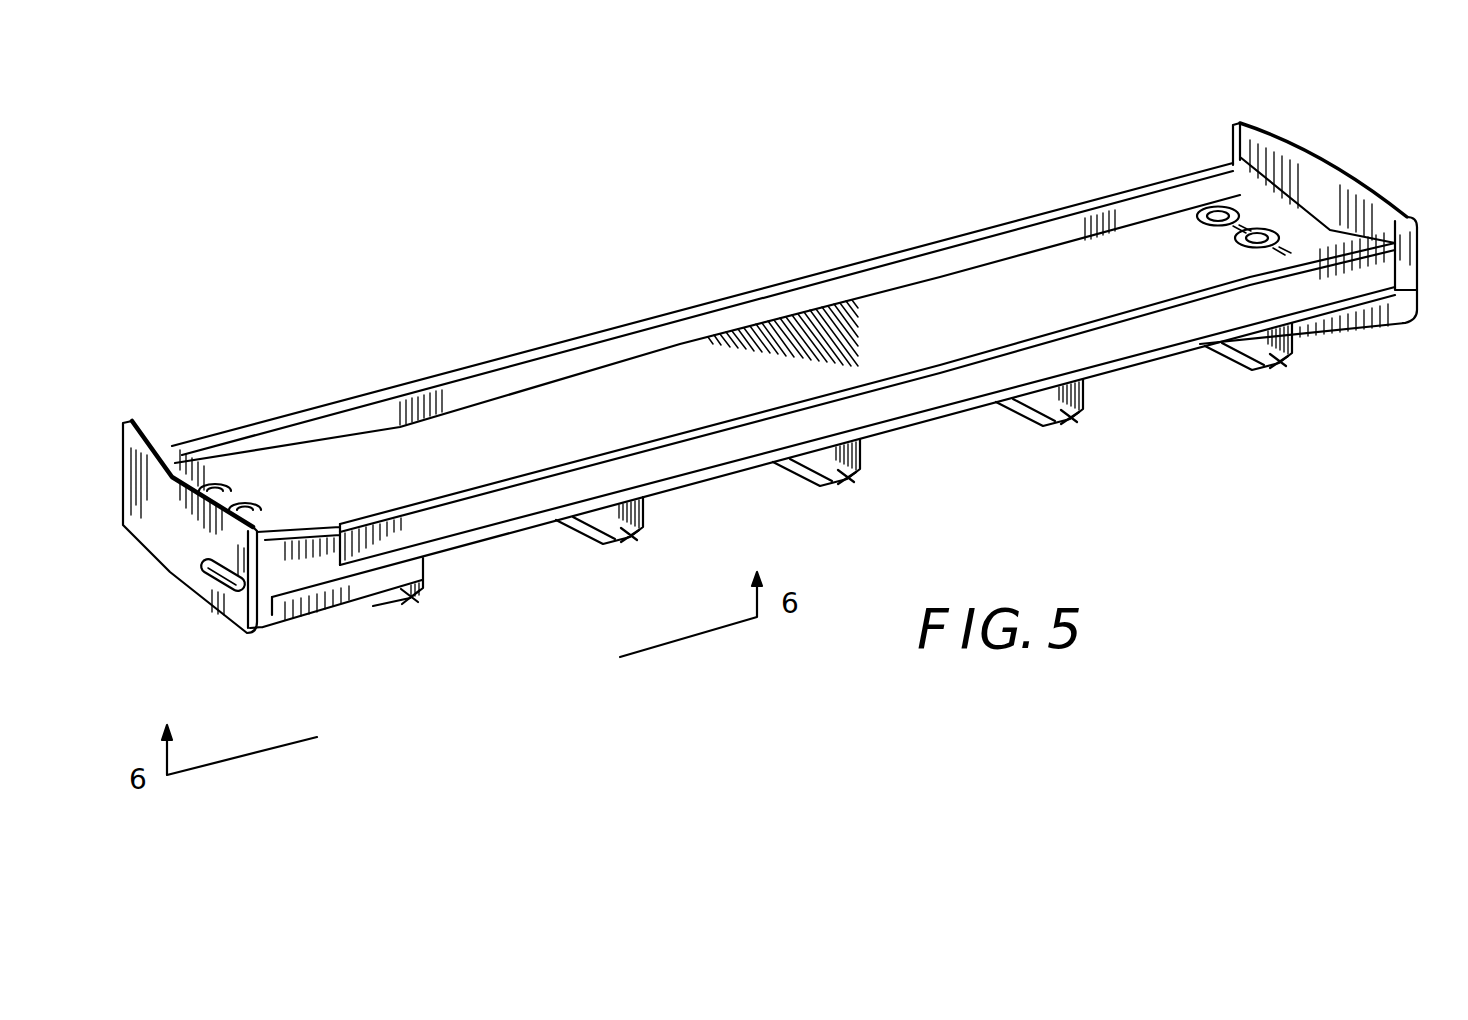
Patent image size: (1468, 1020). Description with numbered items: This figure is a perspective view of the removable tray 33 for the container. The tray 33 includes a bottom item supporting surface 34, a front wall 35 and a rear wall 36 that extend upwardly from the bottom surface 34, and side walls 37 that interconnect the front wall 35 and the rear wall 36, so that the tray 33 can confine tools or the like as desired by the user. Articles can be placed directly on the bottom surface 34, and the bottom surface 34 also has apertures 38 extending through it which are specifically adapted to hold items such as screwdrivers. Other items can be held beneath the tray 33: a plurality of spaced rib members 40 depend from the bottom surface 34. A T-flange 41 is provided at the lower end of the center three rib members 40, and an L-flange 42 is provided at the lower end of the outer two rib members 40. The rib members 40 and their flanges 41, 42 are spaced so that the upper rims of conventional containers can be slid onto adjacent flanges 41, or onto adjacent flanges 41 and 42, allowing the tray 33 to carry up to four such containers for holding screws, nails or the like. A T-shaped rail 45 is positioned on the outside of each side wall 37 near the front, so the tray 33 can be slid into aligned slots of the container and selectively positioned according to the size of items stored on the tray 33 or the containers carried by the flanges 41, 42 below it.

The tray 33 is at (712, 295).
The bottom item supporting surface 34 is at (530, 407).
The front wall 35 is at (923, 393).
The rear wall 36 is at (630, 340).
The side walls 37 is at (213, 537).
The apertures 38 is at (253, 508).
The rib members 40 is at (387, 600).
The T-flange 41 is at (590, 535).
The L-flange 42 is at (412, 597).
The T-shaped rail 45 is at (233, 590).